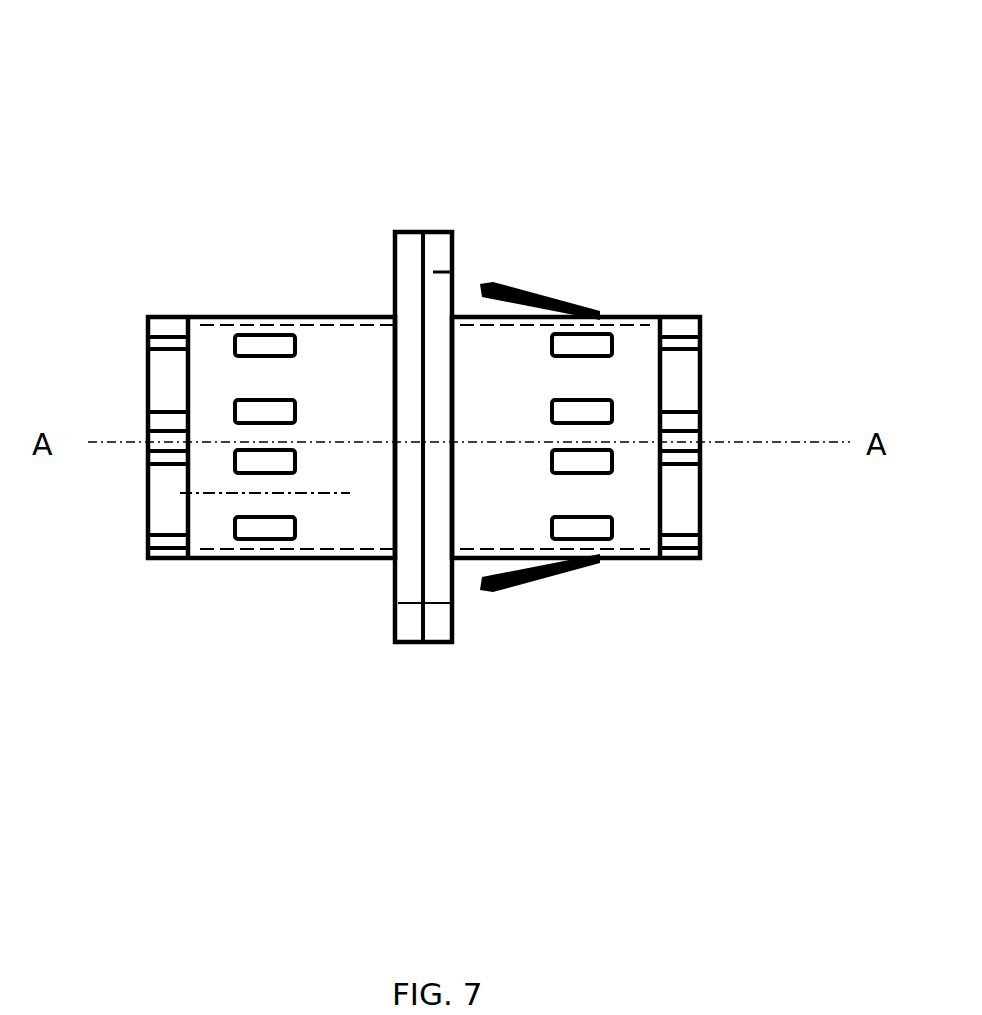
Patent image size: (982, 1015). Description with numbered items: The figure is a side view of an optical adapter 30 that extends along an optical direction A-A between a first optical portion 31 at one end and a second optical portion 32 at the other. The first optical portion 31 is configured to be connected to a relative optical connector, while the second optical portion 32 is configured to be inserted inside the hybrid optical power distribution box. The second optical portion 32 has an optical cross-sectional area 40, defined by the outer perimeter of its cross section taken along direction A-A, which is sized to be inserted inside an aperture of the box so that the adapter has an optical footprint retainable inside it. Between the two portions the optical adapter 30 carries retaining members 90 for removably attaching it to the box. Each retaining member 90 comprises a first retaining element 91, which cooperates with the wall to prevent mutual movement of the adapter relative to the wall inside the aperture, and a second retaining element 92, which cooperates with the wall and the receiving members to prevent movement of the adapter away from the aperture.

The optical adapter 30 is at (188, 236).
The first optical portion 31 is at (226, 514).
The second optical portion 32 is at (633, 532).
The optical cross-sectional area 40 is at (700, 373).
The retaining member 90 is at (543, 264).
The first retaining element 91 is at (440, 221).
The second retaining element 92 is at (500, 614).